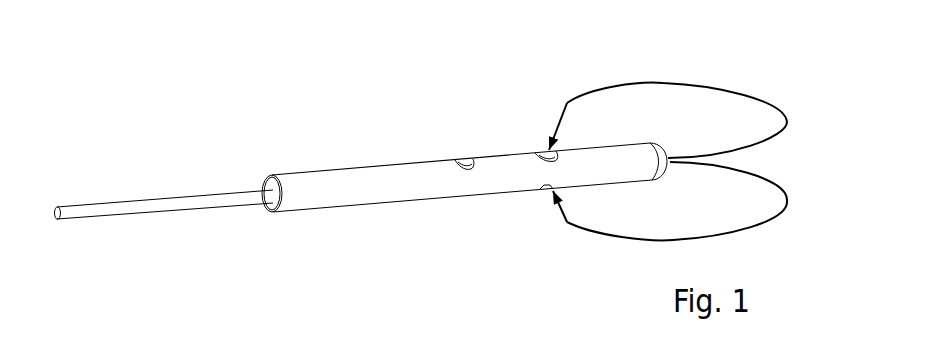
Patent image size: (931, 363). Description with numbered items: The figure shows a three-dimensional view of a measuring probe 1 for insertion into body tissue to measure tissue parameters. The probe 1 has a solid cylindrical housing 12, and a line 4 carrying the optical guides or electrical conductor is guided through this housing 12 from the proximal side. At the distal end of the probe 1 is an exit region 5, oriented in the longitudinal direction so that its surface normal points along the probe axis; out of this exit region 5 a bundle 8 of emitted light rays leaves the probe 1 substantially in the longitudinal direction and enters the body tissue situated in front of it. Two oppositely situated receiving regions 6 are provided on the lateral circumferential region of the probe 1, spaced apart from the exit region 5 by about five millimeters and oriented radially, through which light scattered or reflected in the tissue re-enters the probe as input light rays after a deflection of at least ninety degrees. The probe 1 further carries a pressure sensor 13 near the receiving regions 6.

The probe 1 is at (342, 155).
The line 4 is at (118, 197).
The exit region 5 is at (666, 152).
The receiving regions 6 is at (544, 153).
The bundle of emitted light rays 8 is at (779, 106).
The solid cylindrical housing 12 is at (382, 195).
The pressure sensor 13 is at (466, 162).